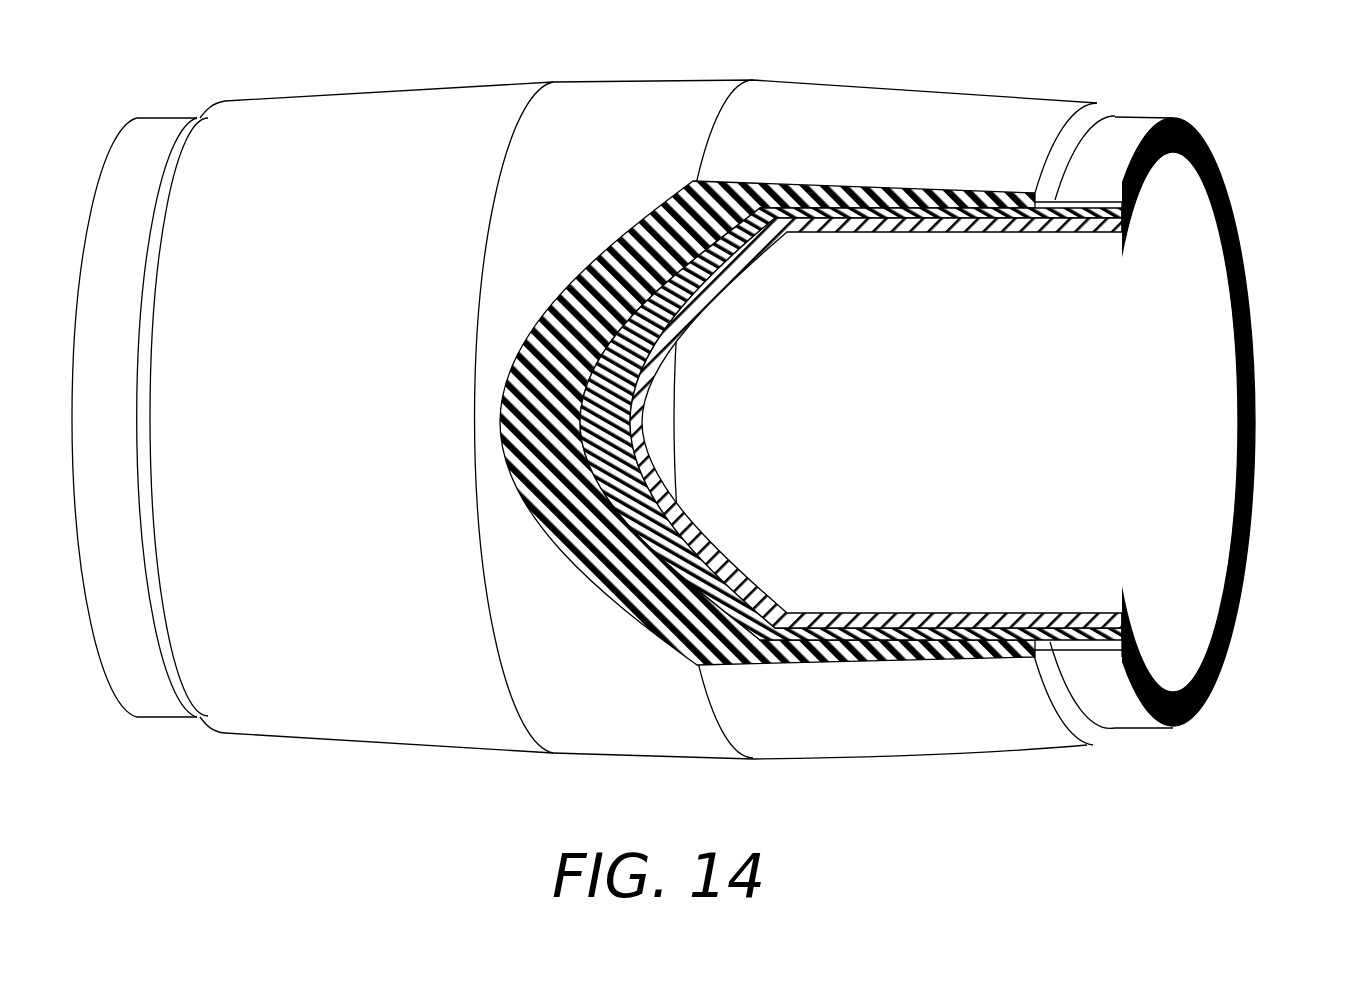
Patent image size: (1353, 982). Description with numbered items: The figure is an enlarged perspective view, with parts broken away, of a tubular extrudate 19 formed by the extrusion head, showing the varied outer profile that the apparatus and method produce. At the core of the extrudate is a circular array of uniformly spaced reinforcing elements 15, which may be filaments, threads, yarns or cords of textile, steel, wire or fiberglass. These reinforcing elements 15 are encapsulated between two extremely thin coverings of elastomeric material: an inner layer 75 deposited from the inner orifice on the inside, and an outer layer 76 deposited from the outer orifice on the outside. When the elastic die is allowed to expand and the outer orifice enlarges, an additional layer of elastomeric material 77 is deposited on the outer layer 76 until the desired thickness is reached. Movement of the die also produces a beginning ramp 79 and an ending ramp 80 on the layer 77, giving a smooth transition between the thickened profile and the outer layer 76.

The reinforcing elements 15 is at (1223, 673).
The tubular extrudate 19 is at (371, 746).
The inner layer 75 is at (970, 233).
The outer layer 76 is at (1108, 701).
The layer of elastomeric material 77 is at (947, 135).
The beginning ramp 79 is at (1105, 113).
The ending ramp 80 is at (733, 107).